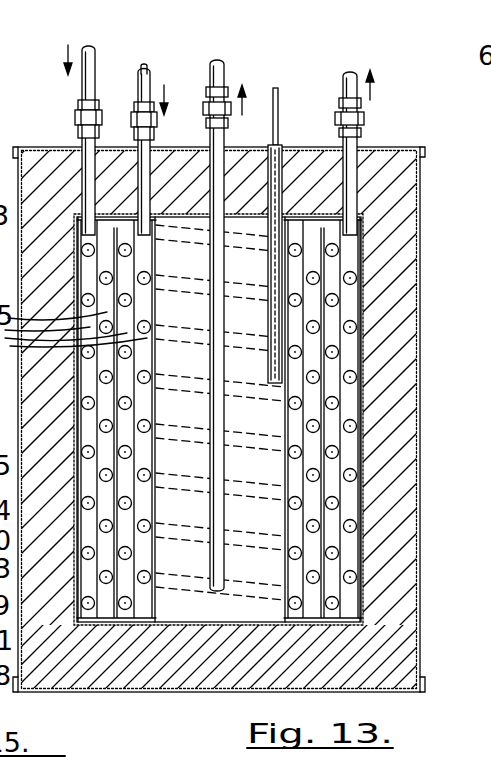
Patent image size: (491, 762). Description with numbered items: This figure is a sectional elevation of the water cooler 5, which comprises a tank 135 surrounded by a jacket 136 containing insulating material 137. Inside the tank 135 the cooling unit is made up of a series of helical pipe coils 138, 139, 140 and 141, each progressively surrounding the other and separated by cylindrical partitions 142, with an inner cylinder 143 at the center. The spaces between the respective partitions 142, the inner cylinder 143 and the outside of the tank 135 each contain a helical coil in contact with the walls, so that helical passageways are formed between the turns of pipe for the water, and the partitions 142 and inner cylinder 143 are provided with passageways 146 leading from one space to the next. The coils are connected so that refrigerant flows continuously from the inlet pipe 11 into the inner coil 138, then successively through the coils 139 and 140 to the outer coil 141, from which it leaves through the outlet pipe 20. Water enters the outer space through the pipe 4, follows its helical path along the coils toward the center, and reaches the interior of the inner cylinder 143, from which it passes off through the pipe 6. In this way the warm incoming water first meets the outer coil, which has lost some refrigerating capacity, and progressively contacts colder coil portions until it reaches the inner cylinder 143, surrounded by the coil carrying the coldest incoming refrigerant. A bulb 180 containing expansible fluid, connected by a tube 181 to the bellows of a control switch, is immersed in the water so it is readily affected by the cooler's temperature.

The pipe 4 is at (88, 62).
The inlet pipe 11 is at (142, 80).
The pipe 6 is at (222, 70).
The outlet pipe 20 is at (352, 74).
The tube 181 is at (278, 104).
The bulb 180 is at (267, 302).
The passageways 146 is at (115, 222).
The jacket 136 is at (421, 327).
The insulating material 137 is at (388, 373).
The water cooler 5 is at (390, 418).
The tank 135 is at (360, 600).
The cylindrical partitions 142 is at (318, 490).
The inner cylinder 143 is at (285, 572).
The outer coil 141 is at (88, 609).
The helical pipe coil 140 is at (106, 583).
The helical pipe coil 139 is at (125, 609).
The inner coil 138 is at (144, 583).